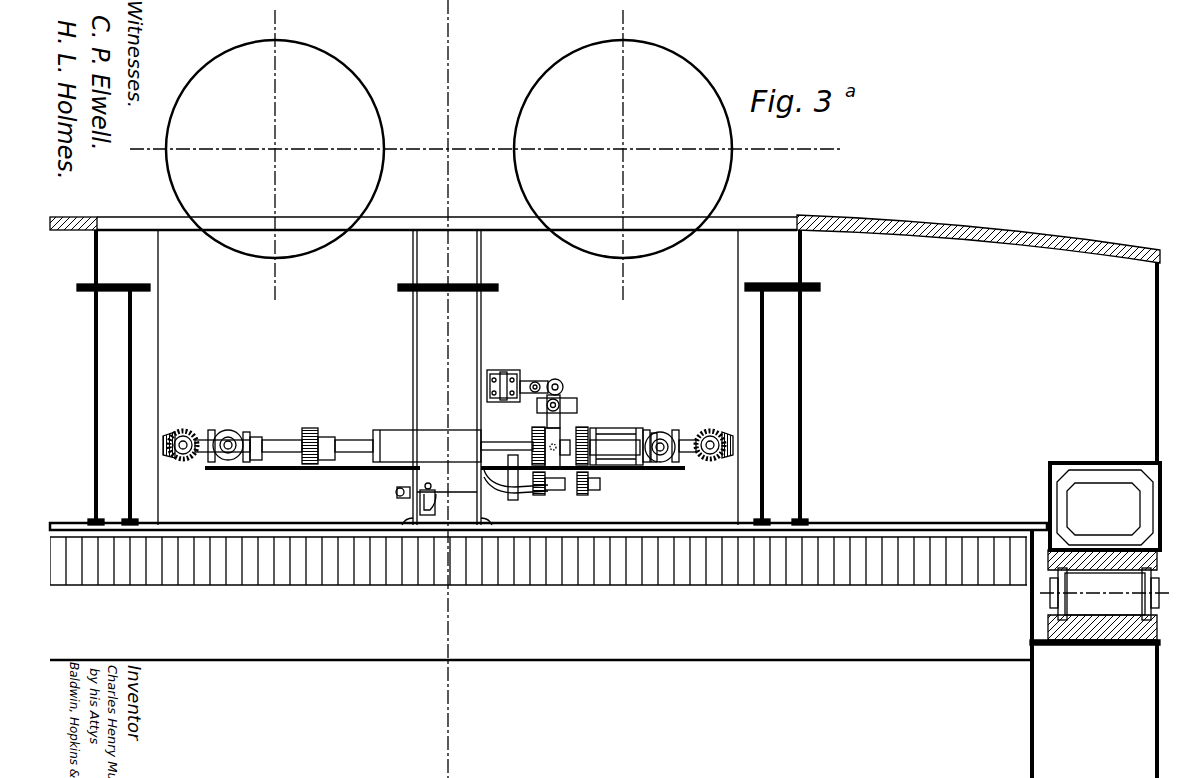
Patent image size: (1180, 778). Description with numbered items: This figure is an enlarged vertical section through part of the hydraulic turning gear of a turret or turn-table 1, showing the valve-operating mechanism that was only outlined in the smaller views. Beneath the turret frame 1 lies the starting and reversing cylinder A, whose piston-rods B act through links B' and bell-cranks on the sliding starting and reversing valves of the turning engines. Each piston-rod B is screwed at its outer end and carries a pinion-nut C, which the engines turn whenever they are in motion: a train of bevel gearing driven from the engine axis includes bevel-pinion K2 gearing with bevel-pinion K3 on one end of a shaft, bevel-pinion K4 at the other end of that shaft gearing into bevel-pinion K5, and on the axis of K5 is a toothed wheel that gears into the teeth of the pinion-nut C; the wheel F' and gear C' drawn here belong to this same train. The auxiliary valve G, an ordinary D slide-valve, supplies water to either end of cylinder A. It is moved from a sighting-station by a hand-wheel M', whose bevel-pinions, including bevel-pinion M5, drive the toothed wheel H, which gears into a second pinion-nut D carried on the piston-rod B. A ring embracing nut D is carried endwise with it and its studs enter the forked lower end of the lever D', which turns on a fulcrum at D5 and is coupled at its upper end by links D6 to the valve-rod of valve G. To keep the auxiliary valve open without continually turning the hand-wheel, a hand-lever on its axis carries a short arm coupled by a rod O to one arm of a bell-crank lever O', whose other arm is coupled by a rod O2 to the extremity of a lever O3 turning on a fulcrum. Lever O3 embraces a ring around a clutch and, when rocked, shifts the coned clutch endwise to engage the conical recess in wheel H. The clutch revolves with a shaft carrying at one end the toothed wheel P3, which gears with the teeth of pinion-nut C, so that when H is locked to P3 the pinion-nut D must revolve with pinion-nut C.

The turret or turn-table 1 is at (603, 520).
The starting and reversing cylinder A is at (427, 446).
The piston-rod B is at (434, 436).
The link B' is at (623, 450).
The pinion-nut C is at (445, 481).
The gear C' is at (593, 437).
The pinion-nut D is at (543, 441).
The lever D' is at (554, 403).
The fulcrum D5 is at (577, 405).
The links D6 is at (541, 385).
The gear F' is at (472, 434).
The auxiliary valve G is at (503, 403).
The toothed wheel H is at (540, 496).
The bevel-pinion K2 is at (727, 459).
The bevel-pinion K3 is at (184, 431).
The bevel-pinion K4 is at (232, 432).
The bevel-pinion K5 is at (250, 433).
The hand-wheel M' is at (546, 501).
The bevel-pinion M5 is at (516, 480).
The rod O is at (392, 492).
The bell-crank lever O' is at (429, 489).
The rod O2 is at (510, 492).
The lever O3 is at (578, 494).
The toothed wheel P3 is at (590, 488).